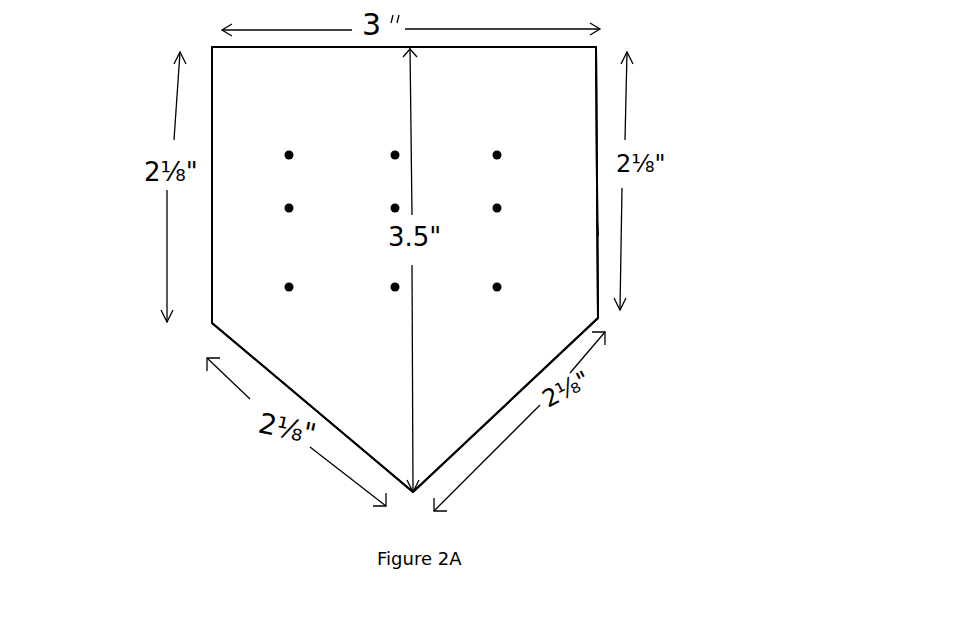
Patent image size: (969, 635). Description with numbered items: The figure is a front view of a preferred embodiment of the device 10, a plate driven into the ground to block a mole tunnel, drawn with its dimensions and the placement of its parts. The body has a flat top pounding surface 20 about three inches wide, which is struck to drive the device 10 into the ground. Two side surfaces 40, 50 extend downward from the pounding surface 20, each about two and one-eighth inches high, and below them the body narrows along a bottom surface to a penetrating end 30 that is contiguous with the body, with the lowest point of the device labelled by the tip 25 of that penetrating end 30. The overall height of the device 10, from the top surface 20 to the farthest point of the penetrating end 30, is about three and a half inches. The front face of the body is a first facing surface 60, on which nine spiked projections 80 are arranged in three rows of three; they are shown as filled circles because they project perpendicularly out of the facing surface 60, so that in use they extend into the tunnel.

The device 10 is at (757, 14).
The pounding surface 20 is at (450, 47).
The bottom apex 25 is at (415, 492).
The penetrating end 30 is at (453, 415).
The side surface 40 is at (212, 133).
The side surface 50 is at (598, 207).
The first facing surface 60 is at (558, 227).
The spiked projections 80 is at (505, 282).